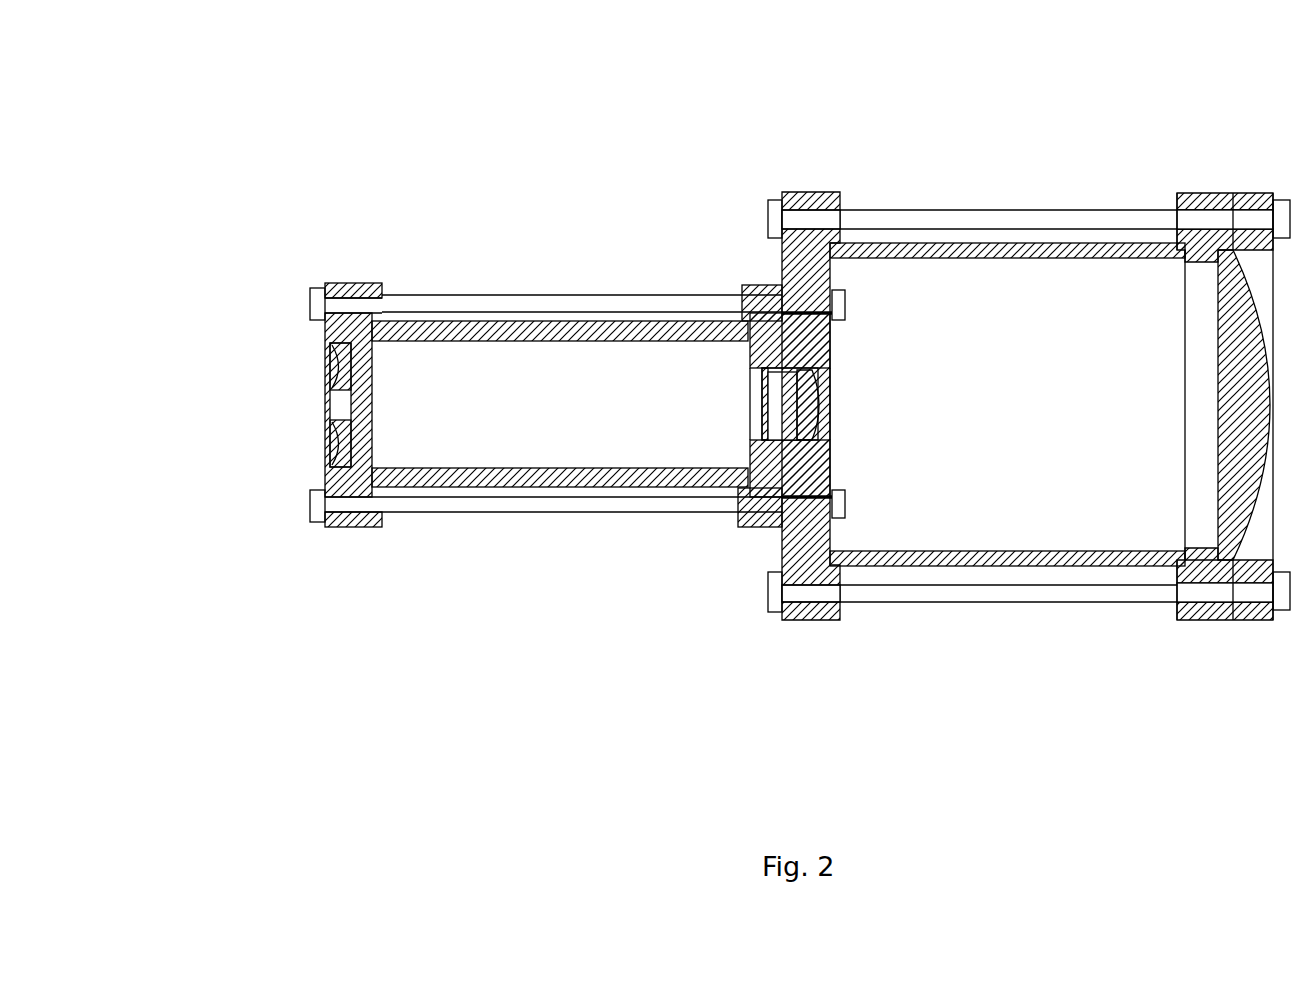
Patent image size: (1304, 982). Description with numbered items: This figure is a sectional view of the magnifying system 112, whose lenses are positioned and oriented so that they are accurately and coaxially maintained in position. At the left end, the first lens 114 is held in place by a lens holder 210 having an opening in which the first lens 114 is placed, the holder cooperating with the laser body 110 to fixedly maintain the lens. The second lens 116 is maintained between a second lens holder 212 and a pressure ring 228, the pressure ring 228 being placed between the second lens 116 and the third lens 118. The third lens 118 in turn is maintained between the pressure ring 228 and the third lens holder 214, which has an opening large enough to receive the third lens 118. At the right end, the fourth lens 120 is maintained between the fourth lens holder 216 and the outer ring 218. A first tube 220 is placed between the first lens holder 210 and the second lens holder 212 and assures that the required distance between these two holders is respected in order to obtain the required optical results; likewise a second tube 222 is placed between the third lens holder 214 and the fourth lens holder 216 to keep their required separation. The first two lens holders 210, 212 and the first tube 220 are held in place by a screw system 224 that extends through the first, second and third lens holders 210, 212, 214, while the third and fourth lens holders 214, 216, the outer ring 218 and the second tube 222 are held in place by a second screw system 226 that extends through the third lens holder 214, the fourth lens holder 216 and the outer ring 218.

The laser body 110 is at (322, 445).
The magnifying system 112 is at (515, 168).
The first lens 114 is at (323, 405).
The second lens 116 is at (752, 380).
The third lens 118 is at (830, 405).
The fourth lens 120 is at (1217, 357).
The first lens holder 210 is at (355, 527).
The second lens holder 212 is at (755, 515).
The third lens holder 214 is at (810, 622).
The fourth lens holder 216 is at (1207, 623).
The outer ring 218 is at (1260, 623).
The first tube 220 is at (545, 480).
The second tube 222 is at (1020, 565).
The screw system 224 is at (462, 293).
The screw system 226 is at (1050, 210).
The pressure ring 228 is at (743, 287).